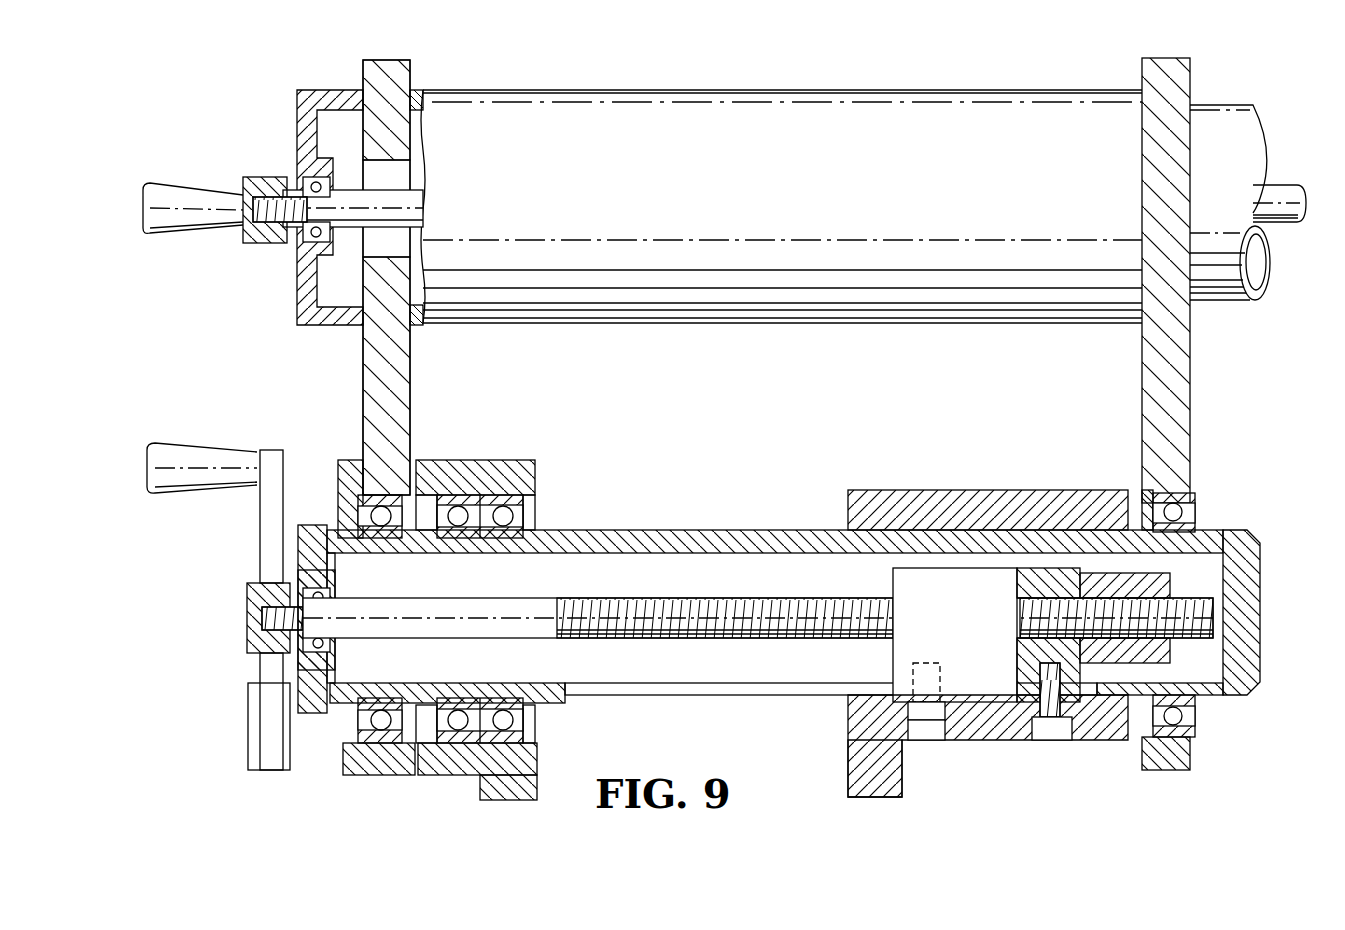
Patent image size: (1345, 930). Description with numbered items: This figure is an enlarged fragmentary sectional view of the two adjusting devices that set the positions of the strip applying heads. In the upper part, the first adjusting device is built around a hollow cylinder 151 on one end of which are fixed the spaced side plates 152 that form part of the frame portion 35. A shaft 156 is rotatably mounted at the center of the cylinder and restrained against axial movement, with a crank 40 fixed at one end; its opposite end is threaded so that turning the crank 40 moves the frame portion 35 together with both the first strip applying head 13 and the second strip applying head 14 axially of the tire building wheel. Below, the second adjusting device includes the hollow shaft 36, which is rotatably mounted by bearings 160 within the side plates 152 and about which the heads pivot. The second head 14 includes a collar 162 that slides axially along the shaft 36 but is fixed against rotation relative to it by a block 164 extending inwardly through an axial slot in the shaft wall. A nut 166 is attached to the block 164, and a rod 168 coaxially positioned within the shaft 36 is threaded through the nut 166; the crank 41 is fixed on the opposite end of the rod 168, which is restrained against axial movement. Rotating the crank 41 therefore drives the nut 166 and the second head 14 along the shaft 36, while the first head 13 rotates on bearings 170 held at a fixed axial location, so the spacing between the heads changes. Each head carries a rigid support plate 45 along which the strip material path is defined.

The first strip applying head 13 is at (542, 757).
The second strip applying head 14 is at (846, 752).
The frame portion 35 is at (374, 70).
The shaft 36 is at (694, 530).
The crank 40 is at (197, 193).
The crank 41 is at (201, 450).
The rigid support member or plate 45 is at (480, 790).
The hollow cylinder 151 is at (833, 122).
The side plates 152 is at (372, 376).
The shaft 156 is at (408, 200).
The bearings 160 is at (362, 508).
The collar 162 is at (984, 497).
The block 164 is at (968, 618).
The nut 166 is at (1165, 573).
The rod 168 is at (513, 600).
The bearings 170 is at (488, 497).